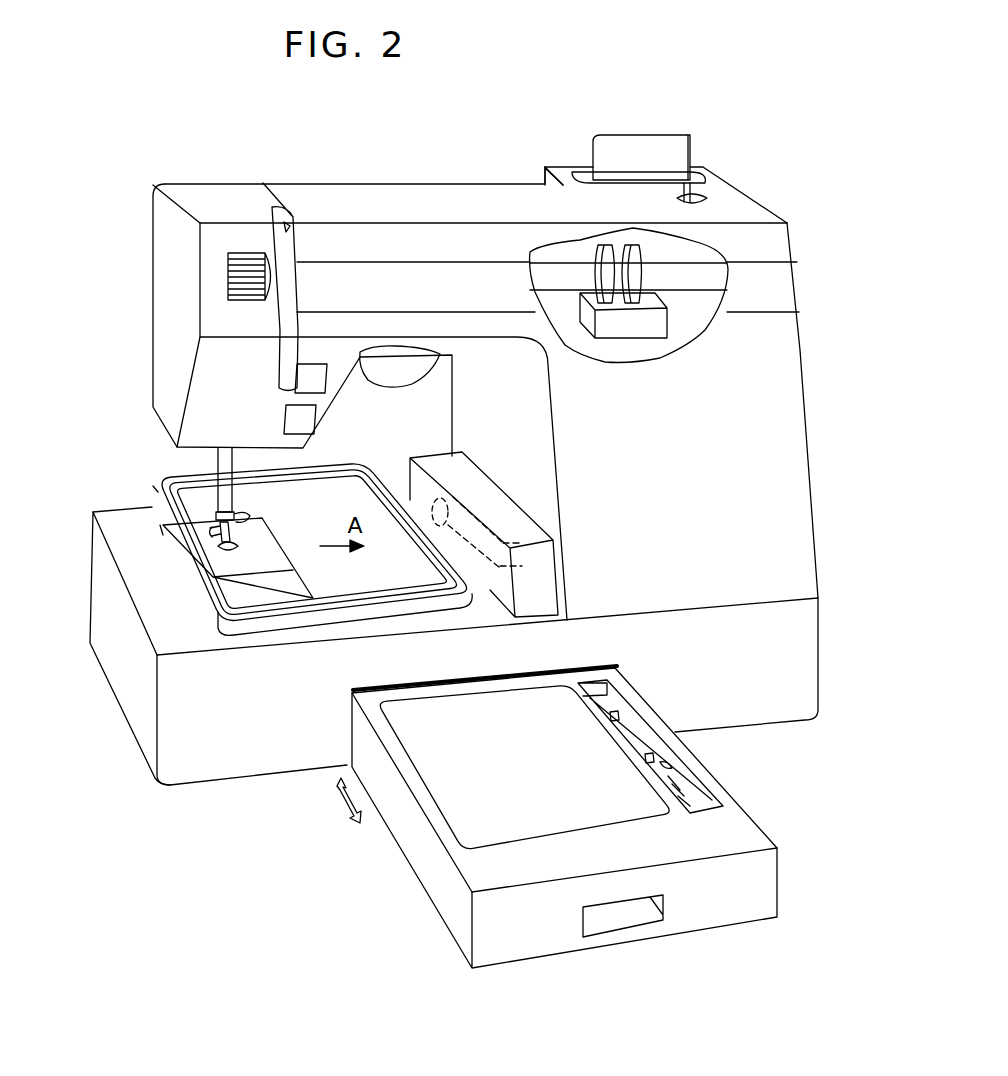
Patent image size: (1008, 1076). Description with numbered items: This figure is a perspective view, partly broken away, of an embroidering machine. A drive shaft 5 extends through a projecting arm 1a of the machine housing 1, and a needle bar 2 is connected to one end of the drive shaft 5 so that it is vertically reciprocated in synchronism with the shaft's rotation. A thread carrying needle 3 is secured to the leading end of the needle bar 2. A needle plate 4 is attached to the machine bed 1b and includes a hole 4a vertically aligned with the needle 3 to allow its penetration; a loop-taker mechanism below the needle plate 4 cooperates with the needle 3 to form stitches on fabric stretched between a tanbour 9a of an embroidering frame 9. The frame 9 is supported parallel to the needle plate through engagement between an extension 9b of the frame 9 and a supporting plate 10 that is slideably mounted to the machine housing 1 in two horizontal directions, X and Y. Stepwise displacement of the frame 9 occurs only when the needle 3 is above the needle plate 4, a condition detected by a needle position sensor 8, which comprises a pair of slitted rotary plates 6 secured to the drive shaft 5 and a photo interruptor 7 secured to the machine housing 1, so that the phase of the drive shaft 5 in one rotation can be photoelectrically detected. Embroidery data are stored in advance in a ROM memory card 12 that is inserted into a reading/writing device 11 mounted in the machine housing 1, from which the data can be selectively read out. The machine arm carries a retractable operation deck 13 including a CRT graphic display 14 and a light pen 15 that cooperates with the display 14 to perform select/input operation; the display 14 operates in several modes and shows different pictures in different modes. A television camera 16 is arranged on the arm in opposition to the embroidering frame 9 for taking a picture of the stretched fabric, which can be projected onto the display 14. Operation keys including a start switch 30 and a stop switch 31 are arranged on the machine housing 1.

The machine housing 1 is at (800, 442).
The projecting arm 1a is at (347, 202).
The machine bed 1b is at (97, 578).
The needle bar 2 is at (213, 462).
The needle 3 is at (232, 530).
The needle plate 4 is at (278, 560).
The hole 4a is at (222, 552).
The drive shaft 5 is at (688, 283).
The rotary plates 6 is at (643, 252).
The photo interruptor 7 is at (664, 320).
The needle position sensor 8 is at (584, 342).
The embroidering frame 9 is at (387, 613).
The tanbour 9a is at (378, 478).
The extension 9b is at (443, 545).
The supporting plate 10 is at (470, 510).
The reading/writing device 11 is at (575, 154).
The memory card 12 is at (661, 148).
The operation deck 13 is at (433, 882).
The graphic display 14 is at (660, 812).
The light pen 15 is at (636, 731).
The television camera 16 is at (407, 373).
The start switch 30 is at (325, 380).
The stop switch 31 is at (315, 421).